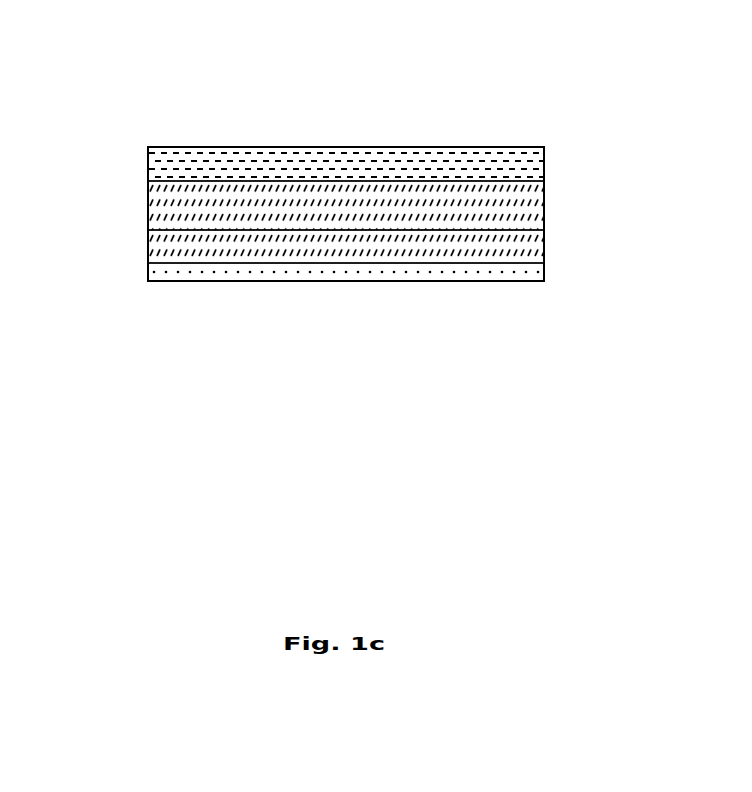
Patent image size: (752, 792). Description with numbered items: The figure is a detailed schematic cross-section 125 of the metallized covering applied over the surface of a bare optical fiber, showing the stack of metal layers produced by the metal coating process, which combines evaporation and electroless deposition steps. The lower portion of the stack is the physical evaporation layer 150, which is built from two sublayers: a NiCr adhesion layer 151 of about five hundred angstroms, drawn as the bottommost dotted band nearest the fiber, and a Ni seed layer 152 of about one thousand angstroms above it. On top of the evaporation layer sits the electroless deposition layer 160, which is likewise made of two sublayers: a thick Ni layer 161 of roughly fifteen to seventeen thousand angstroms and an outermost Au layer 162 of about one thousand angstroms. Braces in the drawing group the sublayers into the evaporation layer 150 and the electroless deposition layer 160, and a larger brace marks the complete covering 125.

The cross-sectional covering 125 is at (349, 202).
The electroless deposition layer 160 is at (399, 128).
The physical evaporation layer 150 is at (399, 304).
The Au layer 162 is at (327, 148).
The Ni layer 161 is at (544, 212).
The Ni seed layer 152 is at (544, 245).
The NiCr adhesion layer 151 is at (348, 282).